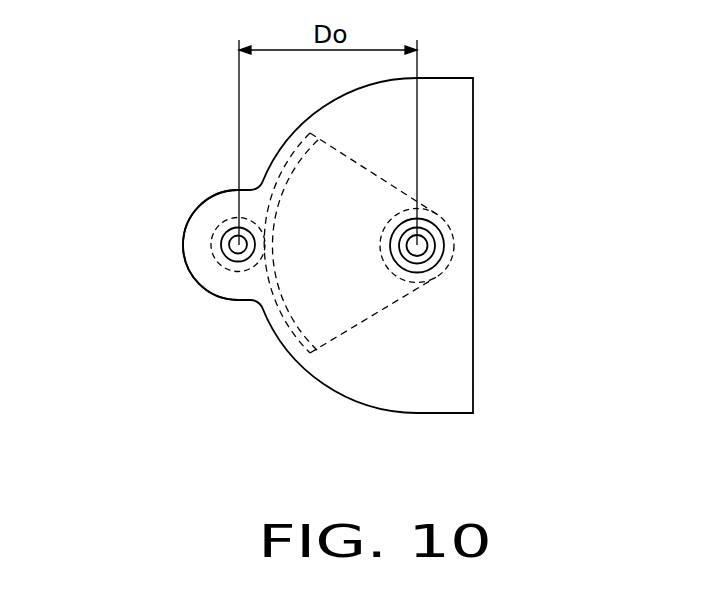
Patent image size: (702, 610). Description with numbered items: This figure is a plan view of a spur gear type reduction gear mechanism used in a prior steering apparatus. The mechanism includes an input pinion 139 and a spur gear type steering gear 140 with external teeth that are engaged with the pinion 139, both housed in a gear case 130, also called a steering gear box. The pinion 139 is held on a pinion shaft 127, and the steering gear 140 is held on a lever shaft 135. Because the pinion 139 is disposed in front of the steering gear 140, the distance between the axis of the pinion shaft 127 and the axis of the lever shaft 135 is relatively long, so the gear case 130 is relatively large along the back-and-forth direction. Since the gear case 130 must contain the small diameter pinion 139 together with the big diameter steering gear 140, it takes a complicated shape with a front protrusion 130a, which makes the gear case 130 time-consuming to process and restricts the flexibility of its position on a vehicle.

The gear case 130 is at (415, 414).
The front protrusion 130a is at (182, 253).
The pinion shaft 127 is at (227, 237).
The input pinion 139 is at (232, 272).
The lever shaft 135 is at (420, 246).
The steering gear 140 is at (290, 353).